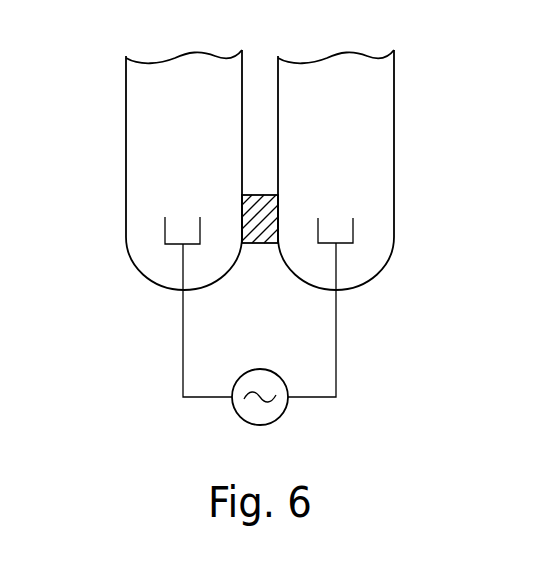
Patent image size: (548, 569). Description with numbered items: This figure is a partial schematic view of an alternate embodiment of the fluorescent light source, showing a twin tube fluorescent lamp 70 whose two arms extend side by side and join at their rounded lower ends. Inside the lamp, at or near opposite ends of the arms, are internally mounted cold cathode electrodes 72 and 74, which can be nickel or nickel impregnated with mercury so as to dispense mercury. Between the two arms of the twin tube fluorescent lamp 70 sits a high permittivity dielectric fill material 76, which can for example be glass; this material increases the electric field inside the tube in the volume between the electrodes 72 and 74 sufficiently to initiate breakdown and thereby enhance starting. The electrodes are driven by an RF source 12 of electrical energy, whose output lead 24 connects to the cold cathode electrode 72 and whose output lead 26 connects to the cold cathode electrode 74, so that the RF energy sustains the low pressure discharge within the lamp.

The twin tube fluorescent lamp 70 is at (126, 110).
The cold cathode electrode 72 is at (165, 232).
The cold cathode electrode 74 is at (353, 220).
The high permittivity dielectric fill material 76 is at (268, 247).
The output lead 24 is at (183, 338).
The output lead 26 is at (336, 325).
The RF source 12 is at (284, 408).